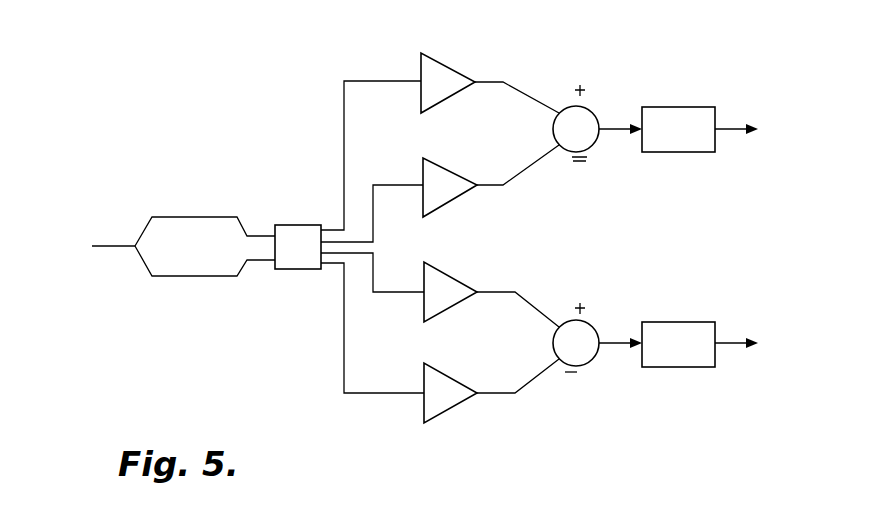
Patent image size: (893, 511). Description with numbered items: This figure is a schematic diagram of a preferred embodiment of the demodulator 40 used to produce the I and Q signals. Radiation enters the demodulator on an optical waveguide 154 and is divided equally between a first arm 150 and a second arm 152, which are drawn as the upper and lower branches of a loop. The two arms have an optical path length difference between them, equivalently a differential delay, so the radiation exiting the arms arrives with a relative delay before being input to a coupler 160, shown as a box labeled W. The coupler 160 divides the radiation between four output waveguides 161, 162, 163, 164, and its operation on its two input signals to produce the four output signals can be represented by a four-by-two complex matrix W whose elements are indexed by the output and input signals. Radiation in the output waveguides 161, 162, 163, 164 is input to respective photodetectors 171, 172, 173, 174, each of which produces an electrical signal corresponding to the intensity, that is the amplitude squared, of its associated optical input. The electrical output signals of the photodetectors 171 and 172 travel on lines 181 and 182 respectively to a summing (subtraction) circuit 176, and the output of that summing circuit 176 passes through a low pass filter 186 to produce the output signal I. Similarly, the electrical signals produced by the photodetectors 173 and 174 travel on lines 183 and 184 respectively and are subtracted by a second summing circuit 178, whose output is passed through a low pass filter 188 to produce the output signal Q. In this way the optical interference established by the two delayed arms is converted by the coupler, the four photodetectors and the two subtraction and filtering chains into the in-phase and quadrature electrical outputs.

The demodulator 40 is at (272, 130).
The optical waveguide 154 is at (100, 246).
The first arm 150 is at (190, 217).
The second arm 152 is at (190, 277).
The coupler 160 is at (296, 225).
The output waveguide 161 is at (374, 81).
The output waveguide 162 is at (392, 185).
The output waveguide 163 is at (400, 290).
The output waveguide 164 is at (385, 393).
The photodetector 171 is at (447, 67).
The photodetector 172 is at (447, 170).
The photodetector 173 is at (447, 275).
The photodetector 174 is at (450, 372).
The line 181 is at (500, 78).
The line 182 is at (486, 188).
The line 183 is at (490, 291).
The line 184 is at (490, 396).
The summing circuit 176 is at (592, 108).
The summing circuit 178 is at (585, 364).
The low pass filter 186 is at (670, 107).
The low pass filter 188 is at (675, 368).